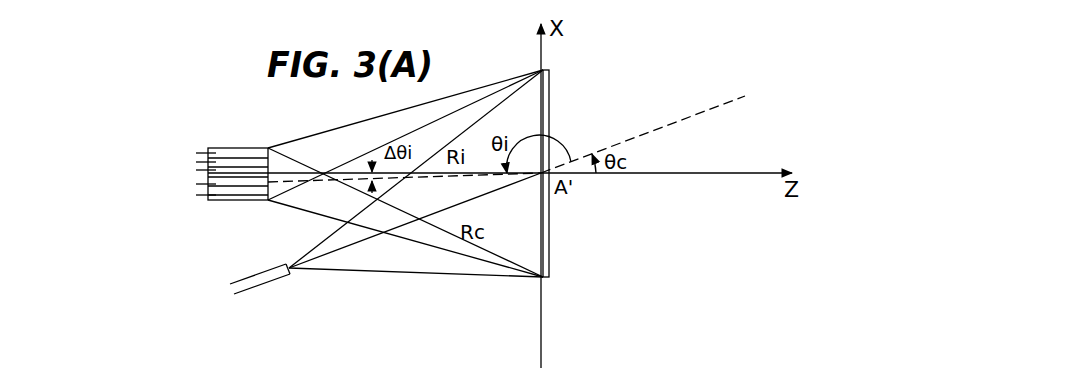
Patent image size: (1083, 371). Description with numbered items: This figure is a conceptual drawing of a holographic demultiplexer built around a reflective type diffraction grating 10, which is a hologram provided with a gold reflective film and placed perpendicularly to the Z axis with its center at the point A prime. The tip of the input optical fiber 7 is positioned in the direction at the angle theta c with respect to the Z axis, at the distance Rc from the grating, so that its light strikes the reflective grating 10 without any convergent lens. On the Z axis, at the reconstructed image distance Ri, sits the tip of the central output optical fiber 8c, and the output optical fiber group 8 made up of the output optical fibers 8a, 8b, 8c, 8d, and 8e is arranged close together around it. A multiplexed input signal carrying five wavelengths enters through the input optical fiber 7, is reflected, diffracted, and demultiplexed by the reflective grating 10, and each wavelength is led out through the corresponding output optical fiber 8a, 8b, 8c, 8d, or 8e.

The output optical fiber group 8 is at (240, 200).
The output optical fiber 8a is at (210, 152).
The output optical fiber 8b is at (210, 162).
The output optical fiber 8c is at (210, 170).
The output optical fiber 8d is at (210, 184).
The output optical fiber 8e is at (210, 195).
The input optical fiber 7 is at (277, 279).
The reflective type diffraction grating 10 is at (543, 229).